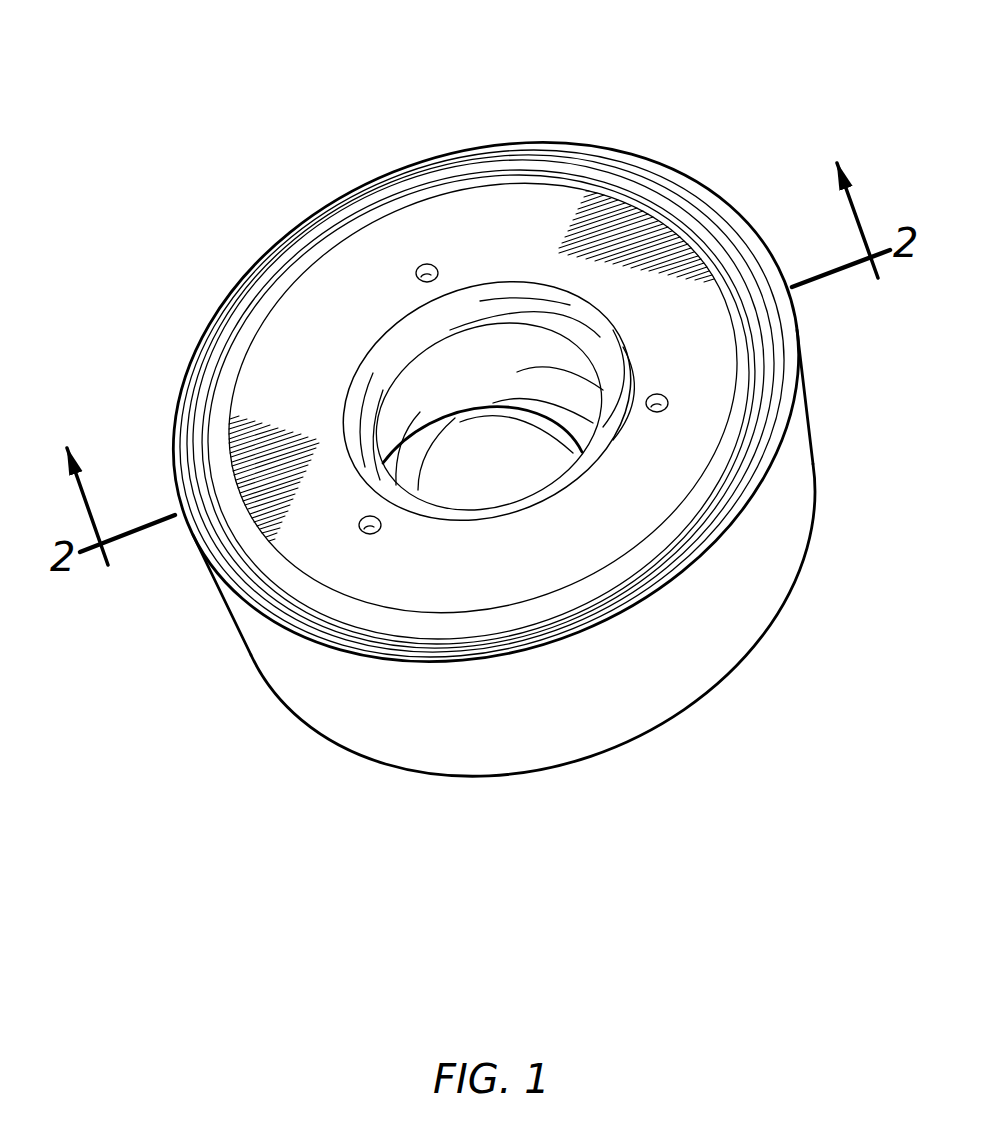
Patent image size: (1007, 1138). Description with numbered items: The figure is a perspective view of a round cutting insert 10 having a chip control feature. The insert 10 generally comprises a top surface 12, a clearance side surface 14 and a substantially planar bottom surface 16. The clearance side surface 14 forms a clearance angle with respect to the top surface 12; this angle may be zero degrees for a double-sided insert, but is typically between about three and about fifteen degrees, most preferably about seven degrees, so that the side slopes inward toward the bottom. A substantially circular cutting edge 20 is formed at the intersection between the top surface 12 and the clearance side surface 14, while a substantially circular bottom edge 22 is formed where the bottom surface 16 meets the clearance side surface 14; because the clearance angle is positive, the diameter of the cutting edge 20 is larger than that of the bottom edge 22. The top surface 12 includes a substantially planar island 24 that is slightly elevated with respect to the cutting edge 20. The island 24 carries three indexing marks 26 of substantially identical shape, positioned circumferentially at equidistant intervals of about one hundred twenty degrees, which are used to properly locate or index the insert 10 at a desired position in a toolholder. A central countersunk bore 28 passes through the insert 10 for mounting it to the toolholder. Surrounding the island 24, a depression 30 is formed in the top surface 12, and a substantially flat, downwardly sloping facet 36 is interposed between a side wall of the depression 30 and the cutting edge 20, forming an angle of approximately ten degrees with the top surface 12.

The round cutting insert 10 is at (201, 76).
The top surface 12 is at (492, 226).
The clearance side surface 14 is at (778, 538).
The bottom surface 16 is at (538, 781).
The cutting edge 20 is at (800, 398).
The bottom edge 22 is at (685, 708).
The island 24 is at (447, 227).
The indexing marks 26 is at (418, 265).
The countersunk bore 28 is at (568, 368).
The depression 30 is at (302, 249).
The facet 36 is at (793, 337).